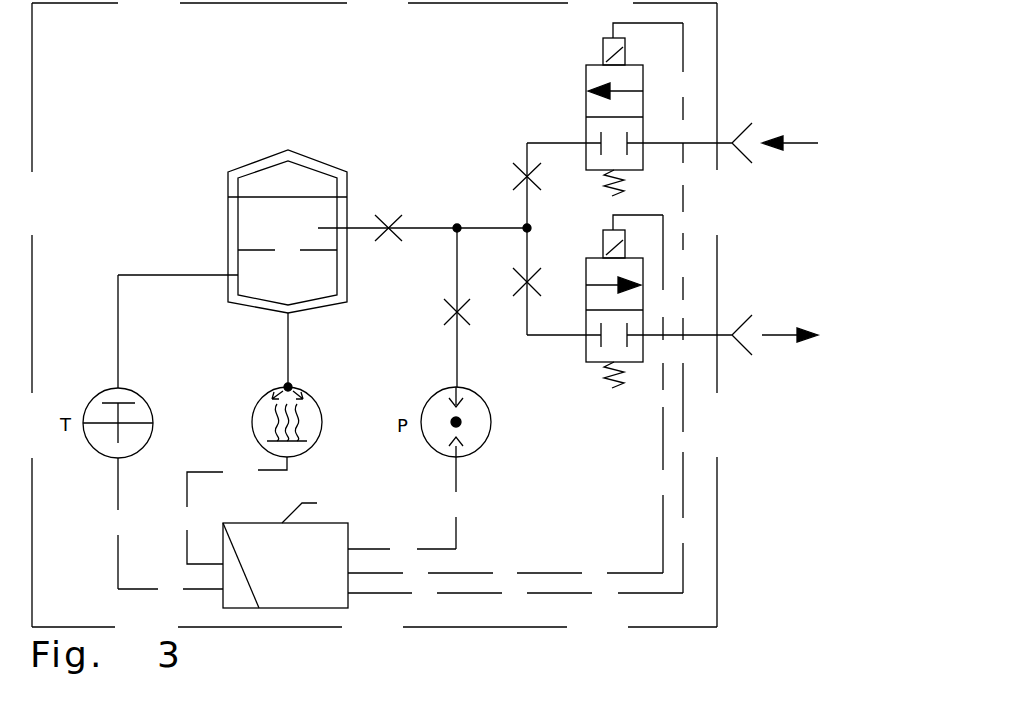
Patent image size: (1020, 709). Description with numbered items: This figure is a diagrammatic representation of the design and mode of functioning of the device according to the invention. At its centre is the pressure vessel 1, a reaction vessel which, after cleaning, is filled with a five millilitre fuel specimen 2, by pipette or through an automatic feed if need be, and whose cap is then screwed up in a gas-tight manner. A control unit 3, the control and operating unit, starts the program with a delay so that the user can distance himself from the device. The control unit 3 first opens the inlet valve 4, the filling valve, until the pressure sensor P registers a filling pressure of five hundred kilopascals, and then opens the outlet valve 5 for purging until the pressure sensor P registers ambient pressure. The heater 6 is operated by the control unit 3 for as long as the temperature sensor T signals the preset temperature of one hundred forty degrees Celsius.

The pressure vessel 1 is at (224, 196).
The fuel specimen 2 is at (322, 282).
The control unit 3 is at (270, 540).
The inlet valve 4 is at (592, 107).
The outlet valve 5 is at (587, 360).
The heater 6 is at (263, 412).